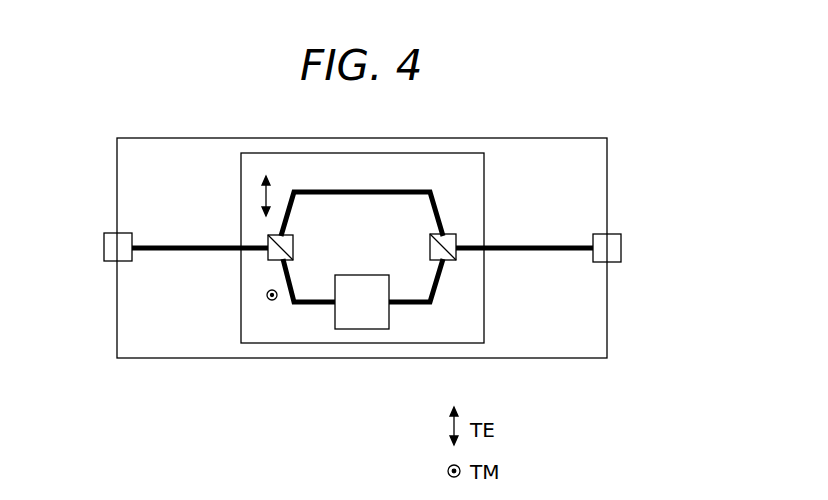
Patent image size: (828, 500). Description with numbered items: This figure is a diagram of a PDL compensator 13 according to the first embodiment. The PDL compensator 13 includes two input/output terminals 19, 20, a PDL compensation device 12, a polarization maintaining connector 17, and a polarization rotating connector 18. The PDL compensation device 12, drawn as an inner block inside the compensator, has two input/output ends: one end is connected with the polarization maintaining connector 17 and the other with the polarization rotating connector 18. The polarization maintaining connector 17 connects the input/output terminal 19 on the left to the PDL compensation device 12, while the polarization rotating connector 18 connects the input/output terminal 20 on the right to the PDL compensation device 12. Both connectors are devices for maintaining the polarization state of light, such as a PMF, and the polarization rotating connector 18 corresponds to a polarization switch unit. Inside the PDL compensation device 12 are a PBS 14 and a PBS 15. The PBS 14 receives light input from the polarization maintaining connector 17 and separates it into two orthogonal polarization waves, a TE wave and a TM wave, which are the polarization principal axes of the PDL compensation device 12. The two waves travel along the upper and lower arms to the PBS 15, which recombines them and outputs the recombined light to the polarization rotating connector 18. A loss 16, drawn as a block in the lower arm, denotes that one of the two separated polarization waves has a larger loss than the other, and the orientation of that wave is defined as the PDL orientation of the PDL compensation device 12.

The PDL compensation device 12 is at (484, 330).
The PDL compensator 13 is at (608, 338).
The PBS 14 is at (295, 240).
The PBS 15 is at (429, 252).
The loss 16 is at (345, 329).
The polarization maintaining connector 17 is at (177, 246).
The polarization rotating connector 18 is at (536, 247).
The input/output terminal 19 is at (103, 252).
The input/output terminal 20 is at (622, 238).